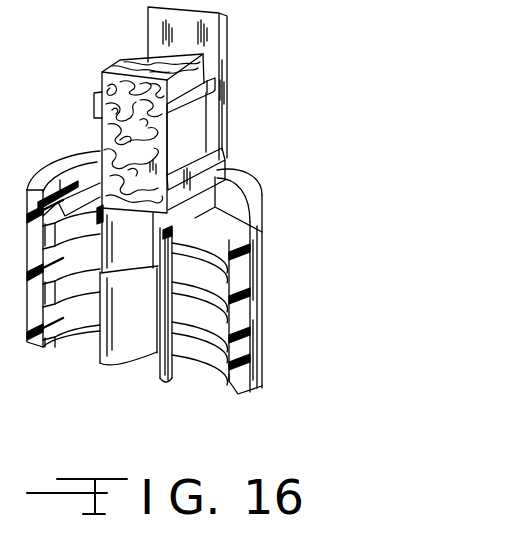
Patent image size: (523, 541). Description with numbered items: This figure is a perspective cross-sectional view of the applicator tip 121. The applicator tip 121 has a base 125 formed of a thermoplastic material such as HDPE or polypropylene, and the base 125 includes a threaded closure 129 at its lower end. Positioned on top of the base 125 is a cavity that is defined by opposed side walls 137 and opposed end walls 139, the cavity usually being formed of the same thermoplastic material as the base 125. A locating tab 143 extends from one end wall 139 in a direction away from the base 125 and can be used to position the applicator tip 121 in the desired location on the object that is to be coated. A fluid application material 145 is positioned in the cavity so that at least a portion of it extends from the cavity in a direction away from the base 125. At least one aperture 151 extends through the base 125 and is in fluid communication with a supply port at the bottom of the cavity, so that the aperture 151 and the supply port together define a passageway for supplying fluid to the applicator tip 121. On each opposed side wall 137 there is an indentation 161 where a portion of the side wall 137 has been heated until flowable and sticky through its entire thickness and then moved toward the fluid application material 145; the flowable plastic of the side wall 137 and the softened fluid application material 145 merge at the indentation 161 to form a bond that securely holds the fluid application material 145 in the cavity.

The applicator tip 121 is at (279, 257).
The base 125 is at (264, 312).
The threaded closure 129 is at (245, 388).
The side wall 137 is at (214, 160).
The end wall 139 is at (231, 104).
The locating tab 143 is at (228, 34).
The fluid application material 145 is at (109, 70).
The aperture 151 is at (128, 362).
The indentation 161 is at (190, 133).